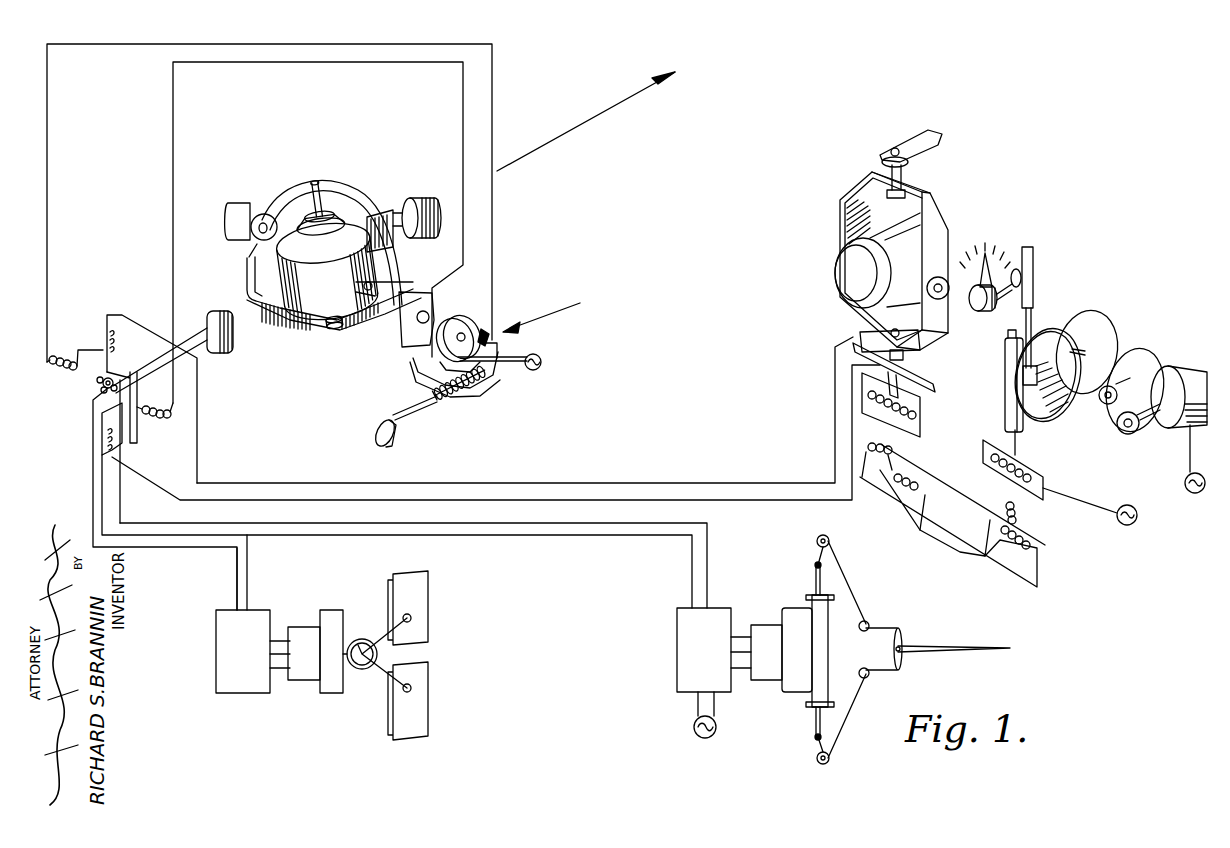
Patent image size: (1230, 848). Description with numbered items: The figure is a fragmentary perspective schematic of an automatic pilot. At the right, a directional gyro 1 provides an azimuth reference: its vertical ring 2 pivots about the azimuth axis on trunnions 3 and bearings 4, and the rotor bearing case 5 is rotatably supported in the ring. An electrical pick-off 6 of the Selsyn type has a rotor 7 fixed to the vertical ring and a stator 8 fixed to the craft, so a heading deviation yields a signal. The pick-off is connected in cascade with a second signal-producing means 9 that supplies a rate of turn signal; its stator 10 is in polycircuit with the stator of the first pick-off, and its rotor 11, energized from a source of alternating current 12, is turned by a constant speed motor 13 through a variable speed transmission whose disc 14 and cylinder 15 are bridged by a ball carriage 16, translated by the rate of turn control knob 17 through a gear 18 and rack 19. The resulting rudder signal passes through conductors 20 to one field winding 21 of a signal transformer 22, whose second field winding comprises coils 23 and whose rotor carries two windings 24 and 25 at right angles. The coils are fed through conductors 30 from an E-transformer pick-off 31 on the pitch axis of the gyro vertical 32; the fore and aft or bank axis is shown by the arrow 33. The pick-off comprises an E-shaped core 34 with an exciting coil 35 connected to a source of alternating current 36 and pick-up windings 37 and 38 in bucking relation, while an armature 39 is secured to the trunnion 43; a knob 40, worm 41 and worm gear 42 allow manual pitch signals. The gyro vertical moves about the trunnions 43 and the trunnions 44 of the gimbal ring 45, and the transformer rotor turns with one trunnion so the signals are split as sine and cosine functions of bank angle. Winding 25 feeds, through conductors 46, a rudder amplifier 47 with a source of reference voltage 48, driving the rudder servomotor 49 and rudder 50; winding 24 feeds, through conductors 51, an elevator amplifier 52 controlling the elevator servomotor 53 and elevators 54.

The directional gyro 1 is at (820, 230).
The vertical ring 2 is at (934, 222).
The trunnions 3 is at (904, 172).
The bearings 4 is at (880, 142).
The rotor bearing case 5 is at (838, 250).
The electrical pick-off 6 is at (872, 430).
The rotor 7 is at (918, 414).
The stator 8 is at (905, 466).
The second signal-producing means 9 is at (1035, 510).
The stator 10 is at (1045, 546).
The rotor 11 is at (1050, 490).
The source of alternating current 12 is at (1128, 525).
The constant speed motor 13 is at (1178, 364).
The disc 14 is at (1050, 322).
The cylinder 15 is at (1006, 380).
The ball carriage 16 is at (1030, 412).
The rate of turn control knob 17 is at (978, 308).
The gear 18 is at (1006, 250).
The rack 19 is at (1036, 272).
The conductors 20 is at (776, 496).
The field winding 21 is at (105, 322).
The signal transformer 22 is at (90, 392).
The coils 23 is at (56, 370).
The rotor winding 24 is at (102, 384).
The rotor winding 25 is at (108, 344).
The conductors 30 is at (320, 44).
The E-transformer pick-off 31 is at (542, 312).
The gyro vertical 32 is at (246, 258).
The fore and aft axis arrow 33 is at (566, 134).
The E-shaped core 34 is at (500, 346).
The exciting coil 35 is at (440, 390).
The source of alternating current 36 is at (538, 371).
The pick-up winding 37 is at (425, 362).
The pick-up winding 38 is at (492, 336).
The armature 39 is at (478, 318).
The knob 40 is at (374, 438).
The worm 41 is at (468, 392).
The worm gear 42 is at (428, 380).
The trunnion 43 is at (258, 207).
The trunnions 44 is at (410, 210).
The gimbal ring 45 is at (246, 287).
The conductors 46 is at (368, 523).
The rudder amplifier 47 is at (677, 637).
The source of reference voltage 48 is at (693, 730).
The rudder servomotor 49 is at (795, 610).
The rudder 50 is at (960, 647).
The conductors 51 is at (240, 572).
The elevator amplifier 52 is at (216, 645).
The elevator servomotor 53 is at (335, 612).
The elevators 54 is at (428, 590).